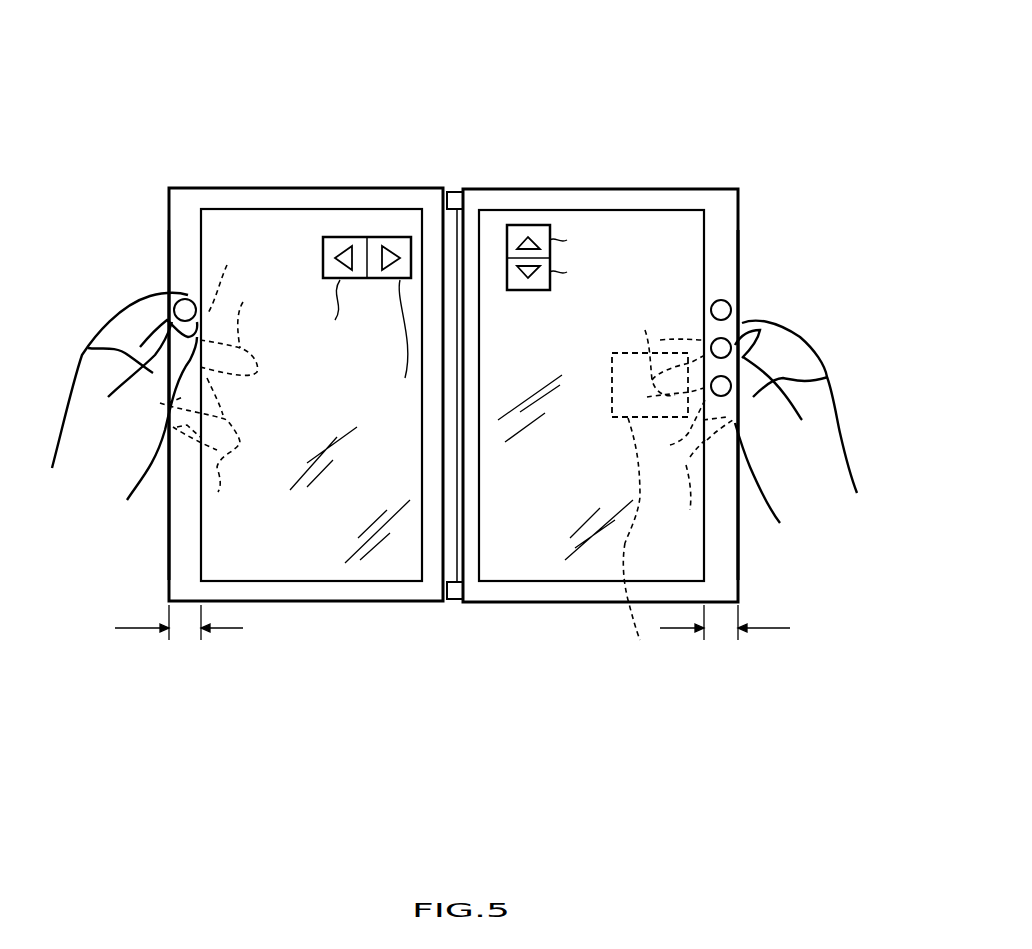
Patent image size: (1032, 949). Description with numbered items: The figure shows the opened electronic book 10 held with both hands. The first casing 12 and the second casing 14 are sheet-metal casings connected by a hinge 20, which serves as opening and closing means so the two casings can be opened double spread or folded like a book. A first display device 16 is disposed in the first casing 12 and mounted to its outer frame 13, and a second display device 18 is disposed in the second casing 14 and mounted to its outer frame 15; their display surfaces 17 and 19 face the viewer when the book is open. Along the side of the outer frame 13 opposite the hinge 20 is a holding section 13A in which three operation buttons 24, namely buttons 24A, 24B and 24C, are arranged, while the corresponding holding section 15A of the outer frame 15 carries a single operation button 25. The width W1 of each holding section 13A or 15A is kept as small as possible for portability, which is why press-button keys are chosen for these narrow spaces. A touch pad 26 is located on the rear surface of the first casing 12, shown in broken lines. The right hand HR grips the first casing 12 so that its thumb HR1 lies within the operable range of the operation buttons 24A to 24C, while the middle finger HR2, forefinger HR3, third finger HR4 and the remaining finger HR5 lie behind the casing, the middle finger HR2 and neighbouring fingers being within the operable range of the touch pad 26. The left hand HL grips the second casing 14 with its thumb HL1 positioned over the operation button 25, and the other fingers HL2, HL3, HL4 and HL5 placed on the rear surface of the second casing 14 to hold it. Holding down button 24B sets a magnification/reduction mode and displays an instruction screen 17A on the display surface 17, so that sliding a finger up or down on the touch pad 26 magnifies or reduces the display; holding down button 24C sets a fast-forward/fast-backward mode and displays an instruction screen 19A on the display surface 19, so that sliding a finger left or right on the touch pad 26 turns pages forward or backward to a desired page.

The electronic book 10 is at (518, 82).
The first casing 12 is at (597, 657).
The outer frame 13 is at (688, 198).
The holding section 13A is at (718, 530).
The second casing 14 is at (280, 655).
The outer frame 15 is at (182, 220).
The holding section 15A is at (185, 530).
The first display device 16 is at (503, 210).
The display surface 17 is at (592, 205).
The instruction screen 17A is at (528, 292).
The second display device 18 is at (224, 206).
The display surface 19 is at (305, 225).
The instruction screen 19A is at (323, 245).
The hinge 20 is at (457, 602).
The operation buttons 24 is at (815, 222).
The operation button 24A is at (727, 300).
The operation button 24B is at (731, 340).
The operation button 24C is at (731, 378).
The operation button 25 is at (180, 298).
The touch pad 26 is at (676, 517).
The left hand HL is at (110, 468).
The thumb of the left hand HL1 is at (90, 348).
The finger of the left hand HL2 is at (236, 326).
The finger of the left hand HL3 is at (210, 341).
The finger of the left hand HL4 is at (212, 435).
The finger of the left hand HL5 is at (212, 469).
The right hand HR is at (840, 500).
The thumb of the right hand HR1 is at (752, 397).
The middle finger of the right hand HR2 is at (663, 353).
The forefinger of the right hand HR3 is at (653, 339).
The third finger of the right hand HR4 is at (676, 471).
The finger of the right hand HR5 is at (692, 478).
The width W1 is at (452, 621).